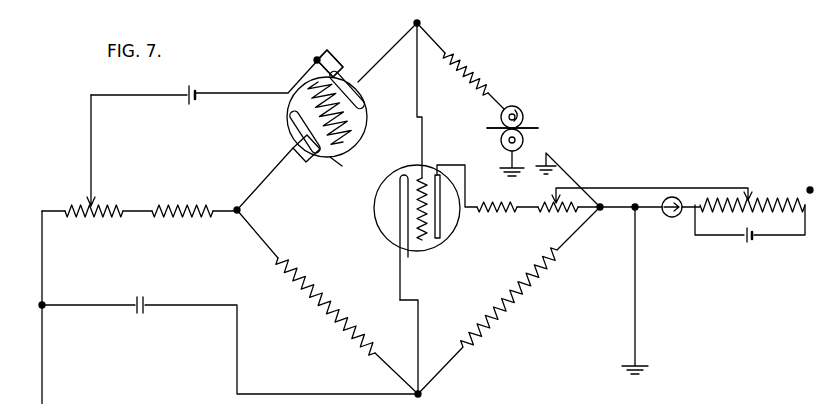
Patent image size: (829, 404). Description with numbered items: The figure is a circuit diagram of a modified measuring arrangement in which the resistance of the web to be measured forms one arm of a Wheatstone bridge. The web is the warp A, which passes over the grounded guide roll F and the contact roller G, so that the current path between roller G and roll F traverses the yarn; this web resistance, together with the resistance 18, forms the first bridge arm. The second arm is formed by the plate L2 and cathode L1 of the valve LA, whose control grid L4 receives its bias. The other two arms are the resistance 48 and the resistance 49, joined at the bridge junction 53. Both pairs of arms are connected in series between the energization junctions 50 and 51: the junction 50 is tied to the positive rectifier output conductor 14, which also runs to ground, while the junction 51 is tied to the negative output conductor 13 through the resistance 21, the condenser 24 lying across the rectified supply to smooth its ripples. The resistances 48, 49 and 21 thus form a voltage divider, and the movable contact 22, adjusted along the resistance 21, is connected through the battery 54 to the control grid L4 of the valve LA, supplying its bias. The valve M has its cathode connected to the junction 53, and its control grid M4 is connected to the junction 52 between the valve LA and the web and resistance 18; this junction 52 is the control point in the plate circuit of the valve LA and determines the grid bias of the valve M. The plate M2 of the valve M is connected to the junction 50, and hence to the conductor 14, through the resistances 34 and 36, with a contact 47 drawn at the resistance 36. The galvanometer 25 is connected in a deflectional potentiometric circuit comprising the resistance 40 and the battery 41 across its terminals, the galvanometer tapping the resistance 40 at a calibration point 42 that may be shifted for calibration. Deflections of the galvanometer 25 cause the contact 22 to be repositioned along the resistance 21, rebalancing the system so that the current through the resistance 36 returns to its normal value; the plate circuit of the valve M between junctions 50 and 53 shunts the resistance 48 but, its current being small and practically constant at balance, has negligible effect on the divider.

The negative output conductor 13 is at (44, 354).
The positive rectifier output conductor 14 is at (637, 283).
The resistance 18 is at (476, 73).
The resistance 21 is at (110, 217).
The movable contact 22 is at (83, 200).
The condenser 24 is at (141, 296).
The galvanometer 25 is at (672, 217).
The resistance 34 is at (489, 205).
The resistance 36 is at (562, 212).
The resistance 40 is at (798, 186).
The battery 41 is at (748, 244).
The calibration point 42 is at (752, 198).
The wiper contact 47 is at (554, 199).
The resistance 48 is at (512, 303).
The resistance 49 is at (316, 283).
The energization junction 50 is at (600, 210).
The energization junction 51 is at (241, 209).
The junction 52 is at (414, 24).
The bridge junction 53 is at (421, 390).
The battery 54 is at (193, 105).
The valve LA is at (368, 89).
The cathode L1 is at (289, 118).
The plate L2 is at (353, 73).
The control grid L4 is at (338, 140).
The valve M is at (376, 220).
The plate M2 is at (447, 216).
The control grid M4 is at (422, 246).
The contact roller G is at (515, 107).
The guide roll F is at (508, 140).
The warp A is at (534, 119).